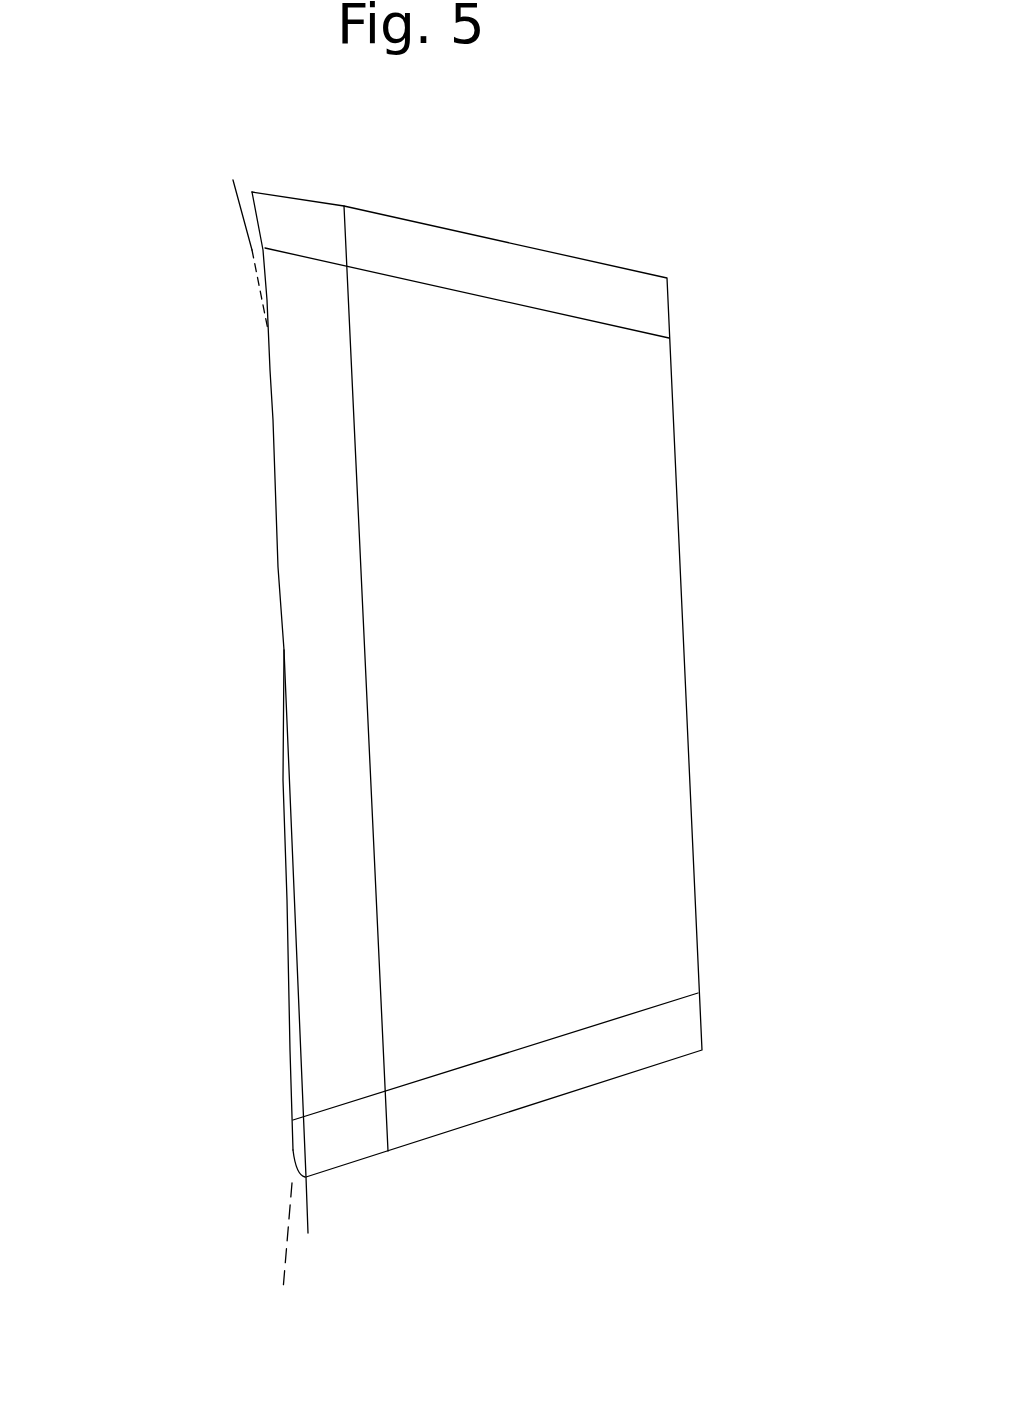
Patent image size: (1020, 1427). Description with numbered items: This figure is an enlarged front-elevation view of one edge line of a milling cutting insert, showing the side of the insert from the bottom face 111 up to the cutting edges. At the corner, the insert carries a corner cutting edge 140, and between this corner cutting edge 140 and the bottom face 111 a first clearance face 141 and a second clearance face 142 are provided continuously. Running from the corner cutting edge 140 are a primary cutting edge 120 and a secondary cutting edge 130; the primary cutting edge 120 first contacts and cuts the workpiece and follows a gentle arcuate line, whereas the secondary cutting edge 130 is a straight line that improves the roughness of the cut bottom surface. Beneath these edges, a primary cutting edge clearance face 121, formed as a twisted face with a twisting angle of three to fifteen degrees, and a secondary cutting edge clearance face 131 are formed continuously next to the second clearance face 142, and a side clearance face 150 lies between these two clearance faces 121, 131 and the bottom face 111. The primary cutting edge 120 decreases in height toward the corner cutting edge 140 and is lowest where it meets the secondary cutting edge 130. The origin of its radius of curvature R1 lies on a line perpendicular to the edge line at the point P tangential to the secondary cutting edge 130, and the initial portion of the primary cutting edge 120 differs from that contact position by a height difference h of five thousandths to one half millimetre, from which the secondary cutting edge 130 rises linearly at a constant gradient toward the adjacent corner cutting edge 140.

The bottom face 111 is at (693, 842).
The primary cutting edge 120 is at (287, 928).
The primary cutting edge clearance face 121 is at (313, 555).
The secondary cutting edge 130 is at (265, 308).
The secondary cutting edge clearance face 131 is at (307, 317).
The corner cutting edge 140 is at (258, 217).
The first clearance face 141 is at (610, 288).
The second clearance face 142 is at (302, 230).
The side clearance face 150 is at (600, 567).
The point tangential to the secondary cutting edge P is at (197, 381).
The radius of curvature of the primary cutting edge R1 is at (175, 730).
The height difference h is at (258, 1222).